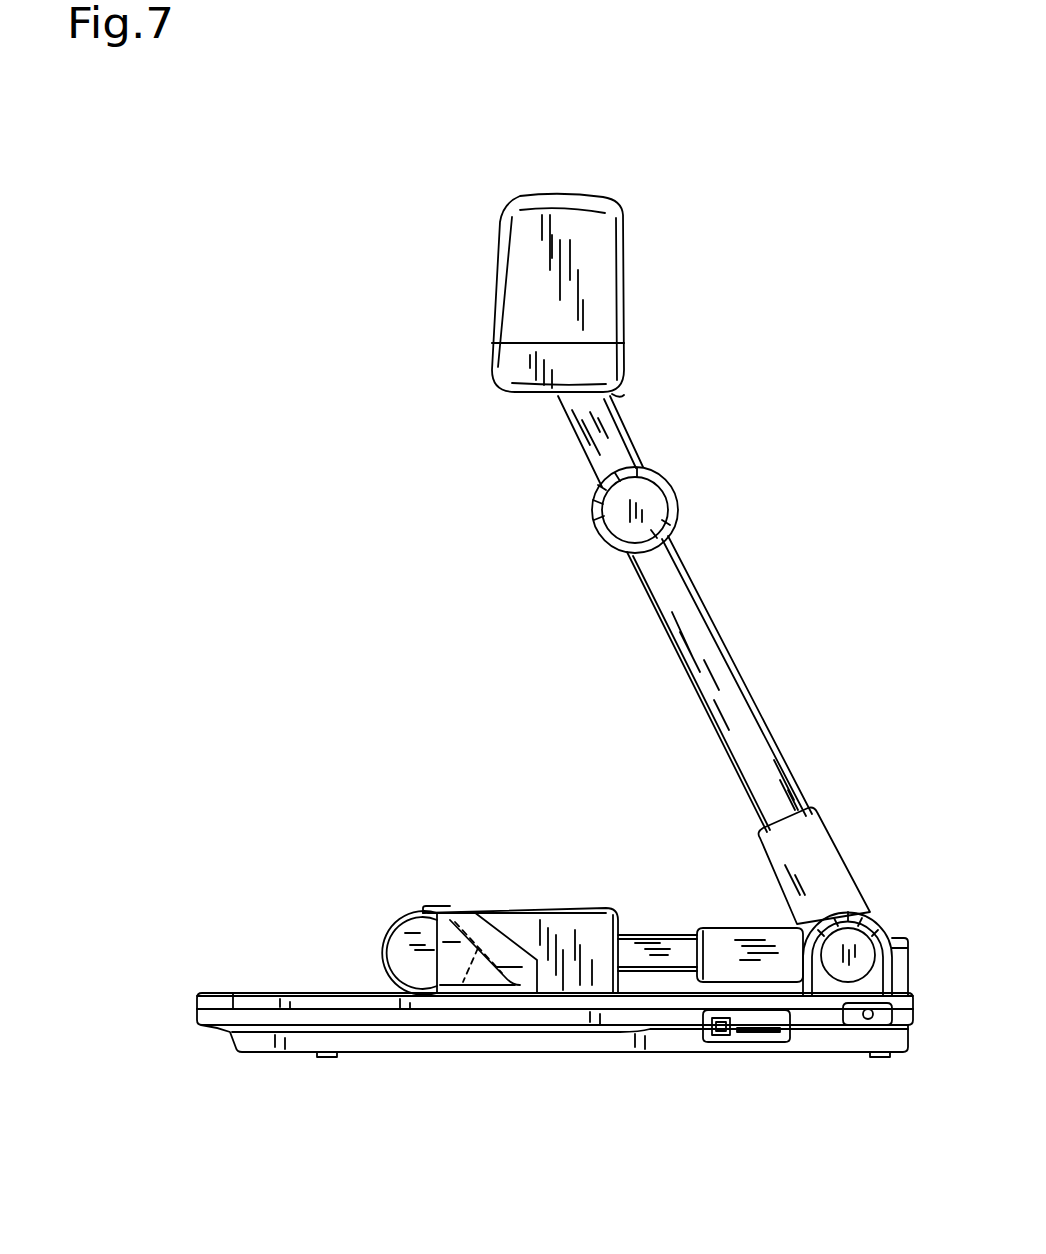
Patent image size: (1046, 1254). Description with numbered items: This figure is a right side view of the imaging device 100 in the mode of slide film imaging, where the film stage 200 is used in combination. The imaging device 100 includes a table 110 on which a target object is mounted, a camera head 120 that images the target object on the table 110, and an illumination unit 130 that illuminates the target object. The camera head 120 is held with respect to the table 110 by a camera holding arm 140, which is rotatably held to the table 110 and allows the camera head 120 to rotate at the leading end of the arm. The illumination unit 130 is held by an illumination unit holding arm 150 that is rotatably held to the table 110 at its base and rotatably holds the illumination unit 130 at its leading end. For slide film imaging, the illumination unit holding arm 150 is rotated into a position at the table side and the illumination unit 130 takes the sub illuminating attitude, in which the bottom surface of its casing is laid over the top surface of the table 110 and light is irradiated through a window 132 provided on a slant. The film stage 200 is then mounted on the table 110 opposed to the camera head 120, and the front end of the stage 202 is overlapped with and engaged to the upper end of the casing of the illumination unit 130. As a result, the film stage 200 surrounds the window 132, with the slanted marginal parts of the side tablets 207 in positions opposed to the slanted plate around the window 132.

The imaging device 100 is at (347, 618).
The table 110 is at (280, 992).
The camera head 120 is at (595, 298).
The illumination unit 130 is at (400, 918).
The window 132 is at (463, 982).
The camera holding arm 140 is at (730, 690).
The illumination unit holding arm 150 is at (660, 935).
The film stage 200 is at (565, 908).
The stage 202 is at (500, 905).
The side tablets 207 is at (525, 985).